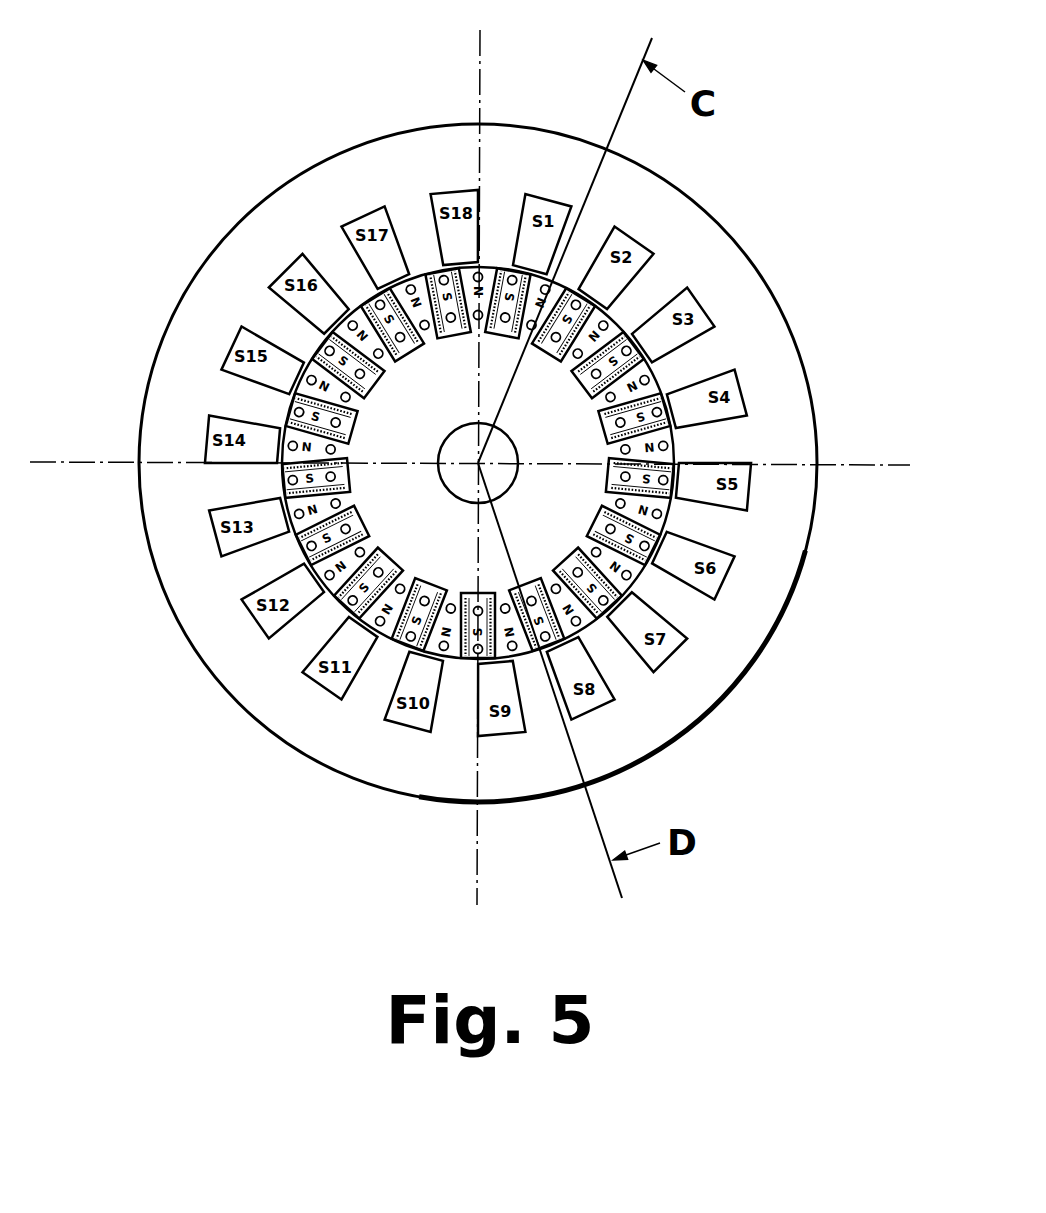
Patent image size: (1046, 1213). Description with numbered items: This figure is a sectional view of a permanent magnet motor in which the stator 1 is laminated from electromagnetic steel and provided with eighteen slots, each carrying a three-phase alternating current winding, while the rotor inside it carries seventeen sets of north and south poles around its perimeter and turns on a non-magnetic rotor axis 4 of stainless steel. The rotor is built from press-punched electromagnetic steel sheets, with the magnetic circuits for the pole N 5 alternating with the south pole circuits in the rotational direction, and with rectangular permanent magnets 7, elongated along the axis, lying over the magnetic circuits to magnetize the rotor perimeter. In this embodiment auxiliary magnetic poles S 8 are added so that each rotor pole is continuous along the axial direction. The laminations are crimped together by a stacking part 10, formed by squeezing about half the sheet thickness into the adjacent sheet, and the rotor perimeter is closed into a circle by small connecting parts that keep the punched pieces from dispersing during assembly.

The stator 1 is at (507, 149).
The rotor axis 4 is at (502, 478).
The magnetic circuits for the pole N 5 is at (583, 398).
The permanent magnet 7 is at (672, 435).
The auxiliary magnetic poles S 8 is at (627, 340).
The stacking part 10 is at (653, 417).